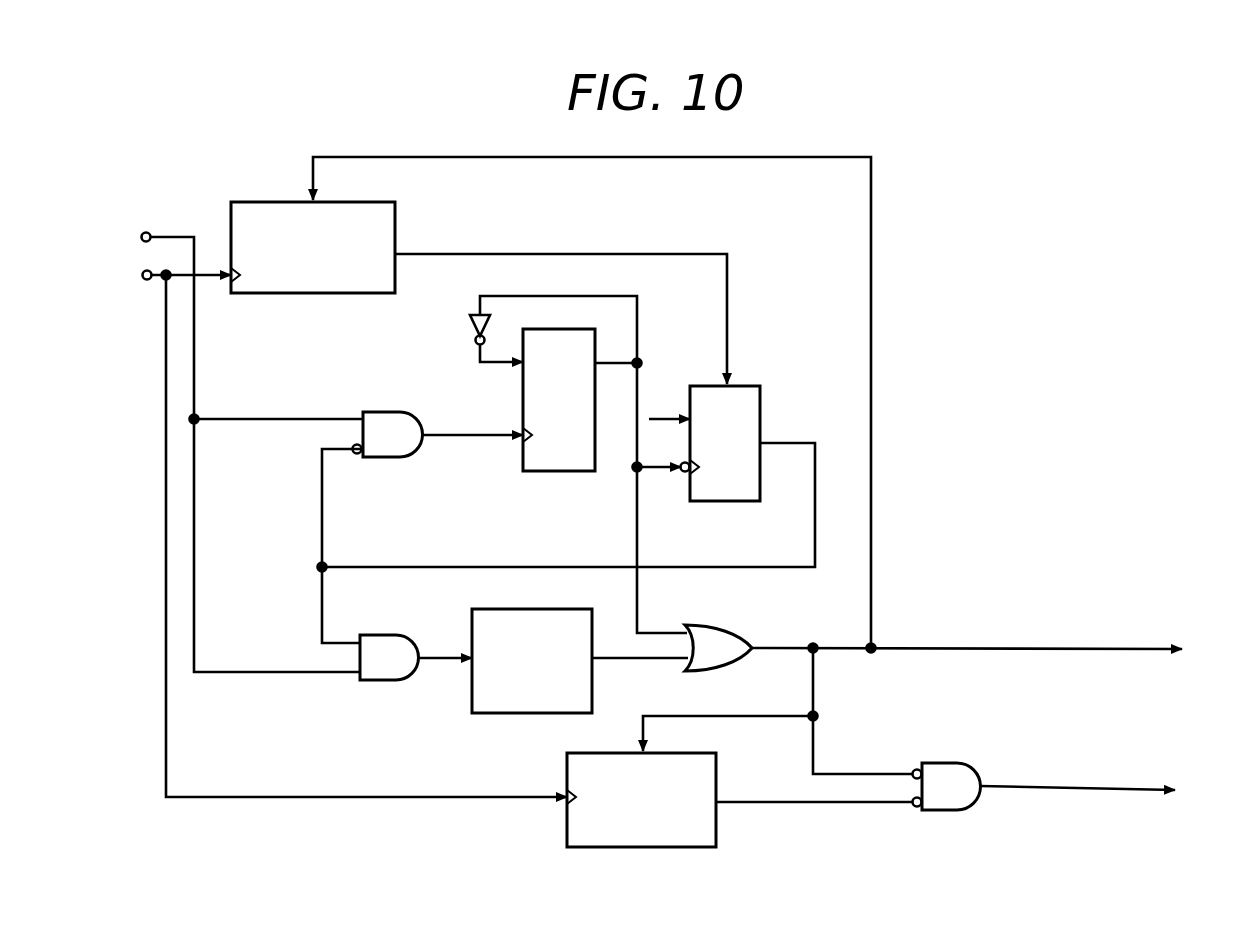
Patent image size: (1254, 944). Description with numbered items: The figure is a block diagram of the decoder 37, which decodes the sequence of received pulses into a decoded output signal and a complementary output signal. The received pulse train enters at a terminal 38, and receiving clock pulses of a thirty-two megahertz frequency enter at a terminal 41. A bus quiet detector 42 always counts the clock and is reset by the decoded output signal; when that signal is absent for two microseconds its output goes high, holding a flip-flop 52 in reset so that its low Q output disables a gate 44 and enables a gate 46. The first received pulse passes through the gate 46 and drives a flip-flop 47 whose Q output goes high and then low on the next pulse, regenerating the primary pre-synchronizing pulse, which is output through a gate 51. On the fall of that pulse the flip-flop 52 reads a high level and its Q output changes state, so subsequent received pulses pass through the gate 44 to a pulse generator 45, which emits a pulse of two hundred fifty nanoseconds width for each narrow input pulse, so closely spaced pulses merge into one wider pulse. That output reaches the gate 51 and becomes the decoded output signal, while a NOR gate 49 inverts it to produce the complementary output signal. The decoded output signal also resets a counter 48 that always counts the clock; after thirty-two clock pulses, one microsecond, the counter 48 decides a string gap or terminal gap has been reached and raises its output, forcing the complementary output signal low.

The decoder 37 is at (1069, 384).
The terminal 38 is at (146, 232).
The terminal 41 is at (147, 280).
The bus quiet detector 42 is at (257, 202).
The gate 44 is at (393, 680).
The pulse generator 45 is at (493, 713).
The gate 46 is at (385, 412).
The flip-flop 47 is at (580, 471).
The counter 48 is at (716, 764).
The NOR gate 49 is at (946, 763).
The gate 51 is at (731, 625).
The flip-flop 52 is at (745, 501).